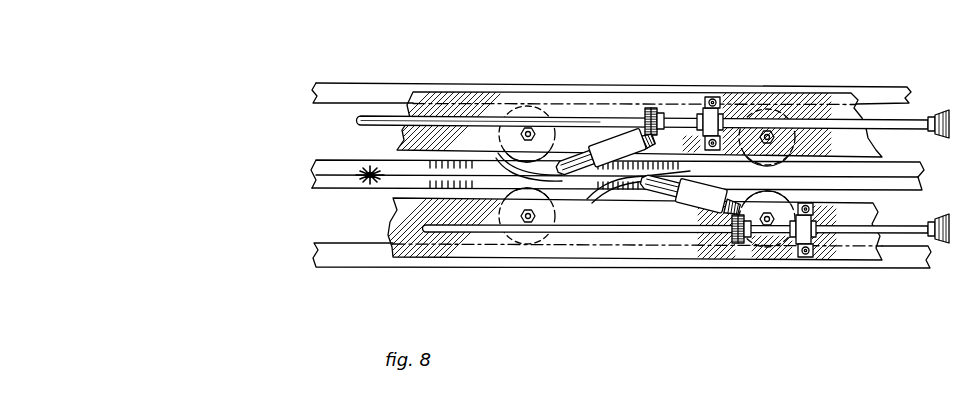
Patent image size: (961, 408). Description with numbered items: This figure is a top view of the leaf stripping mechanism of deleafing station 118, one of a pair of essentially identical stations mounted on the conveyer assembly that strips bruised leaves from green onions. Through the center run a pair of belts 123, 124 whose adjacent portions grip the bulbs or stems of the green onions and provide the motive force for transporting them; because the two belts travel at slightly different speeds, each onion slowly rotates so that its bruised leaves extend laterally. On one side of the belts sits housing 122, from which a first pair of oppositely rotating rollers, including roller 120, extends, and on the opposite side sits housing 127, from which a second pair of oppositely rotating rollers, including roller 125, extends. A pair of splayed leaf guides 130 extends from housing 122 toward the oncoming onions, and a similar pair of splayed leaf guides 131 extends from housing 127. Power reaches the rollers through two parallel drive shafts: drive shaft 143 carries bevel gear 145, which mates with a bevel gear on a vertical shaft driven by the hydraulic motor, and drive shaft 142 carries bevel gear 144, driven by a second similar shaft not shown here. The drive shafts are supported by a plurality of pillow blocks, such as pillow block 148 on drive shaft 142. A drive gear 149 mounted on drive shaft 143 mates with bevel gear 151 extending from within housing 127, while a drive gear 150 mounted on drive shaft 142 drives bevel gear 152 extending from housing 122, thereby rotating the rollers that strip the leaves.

The deleafing station 118 is at (703, 348).
The roller 120 is at (573, 154).
The housing 122 is at (610, 133).
The belt 123 is at (337, 160).
The belt 124 is at (328, 190).
The roller 125 is at (645, 200).
The housing 127 is at (708, 212).
The splayed leaf guides 130 is at (497, 100).
The splayed leaf guides 131 is at (600, 198).
The drive shaft 142 is at (838, 117).
The drive shaft 143 is at (882, 258).
The bevel gear 144 is at (949, 108).
The bevel gear 145 is at (948, 246).
The pillow block 148 is at (720, 98).
The drive gear 149 is at (750, 214).
The drive gear 150 is at (650, 108).
The bevel gear 151 is at (757, 216).
The bevel gear 152 is at (667, 114).